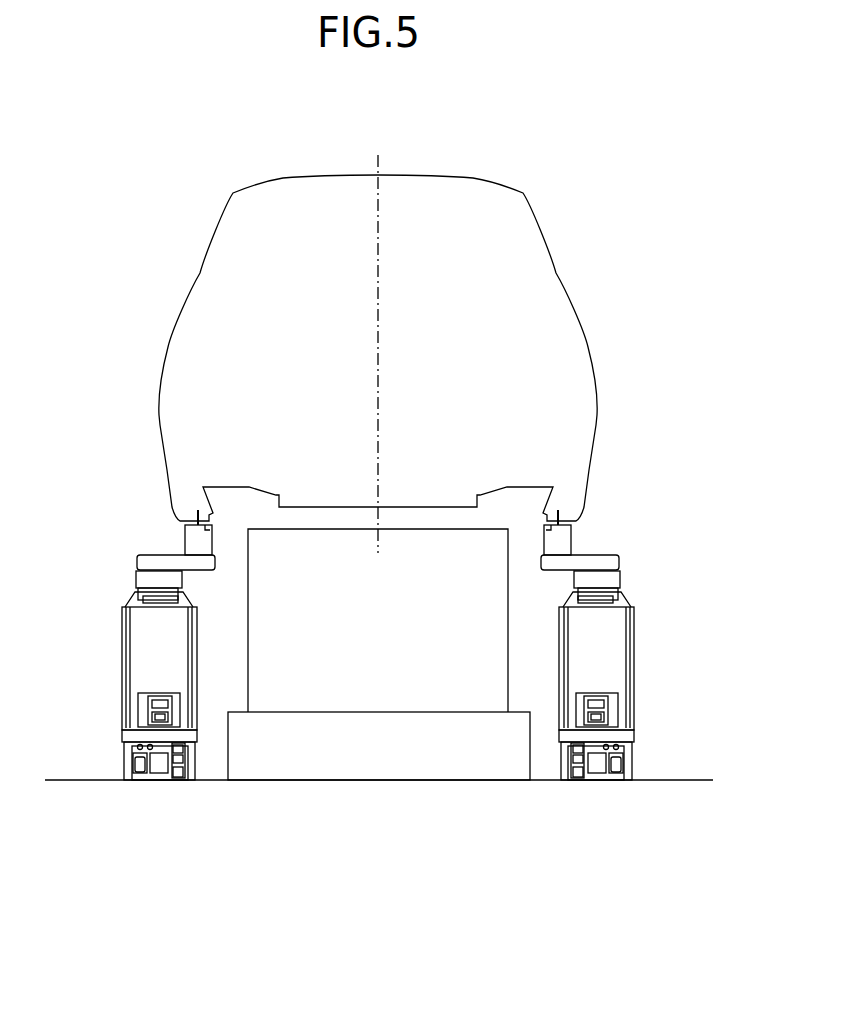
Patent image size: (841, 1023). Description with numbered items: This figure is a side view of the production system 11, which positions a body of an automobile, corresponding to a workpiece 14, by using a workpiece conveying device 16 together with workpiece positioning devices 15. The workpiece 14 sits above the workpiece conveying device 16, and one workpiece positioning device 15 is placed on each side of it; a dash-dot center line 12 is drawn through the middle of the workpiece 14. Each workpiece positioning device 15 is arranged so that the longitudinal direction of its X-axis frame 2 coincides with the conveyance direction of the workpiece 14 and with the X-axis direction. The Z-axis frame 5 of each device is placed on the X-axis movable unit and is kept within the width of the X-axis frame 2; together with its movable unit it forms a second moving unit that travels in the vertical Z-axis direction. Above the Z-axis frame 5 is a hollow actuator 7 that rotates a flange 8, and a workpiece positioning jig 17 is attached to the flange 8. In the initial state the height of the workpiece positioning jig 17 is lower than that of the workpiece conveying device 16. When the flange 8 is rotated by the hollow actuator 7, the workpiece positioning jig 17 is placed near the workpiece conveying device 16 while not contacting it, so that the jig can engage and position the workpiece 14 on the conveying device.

The X-axis frame 2 is at (632, 773).
The Z-axis frame 5 is at (613, 655).
The hollow actuator 7 is at (613, 577).
The flange 8 is at (593, 558).
The production system 11 is at (676, 135).
The center axis 12 is at (380, 198).
The workpiece 14 is at (548, 297).
The workpiece positioning device 15 is at (77, 592).
The workpiece conveying device 16 is at (380, 685).
The workpiece positioning jig 17 is at (565, 540).